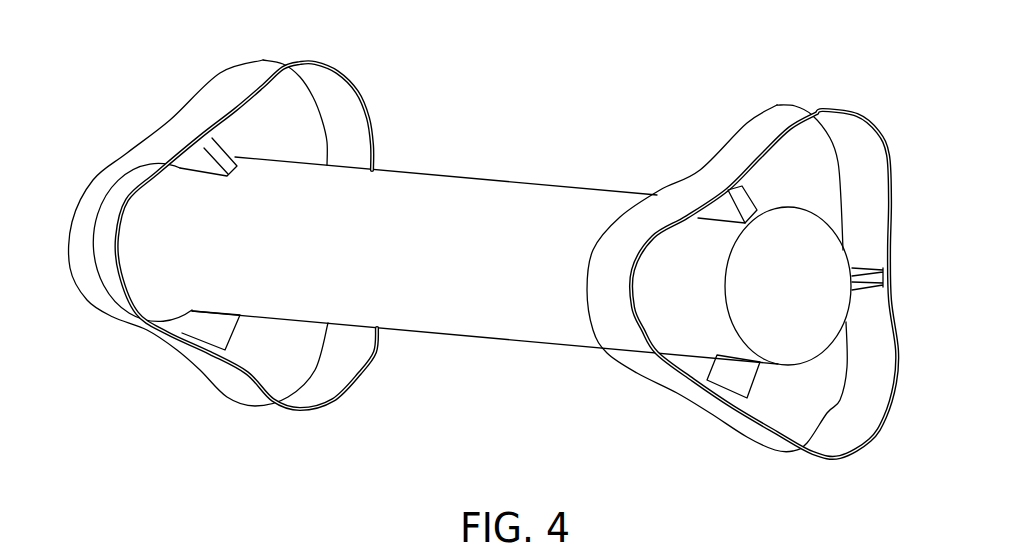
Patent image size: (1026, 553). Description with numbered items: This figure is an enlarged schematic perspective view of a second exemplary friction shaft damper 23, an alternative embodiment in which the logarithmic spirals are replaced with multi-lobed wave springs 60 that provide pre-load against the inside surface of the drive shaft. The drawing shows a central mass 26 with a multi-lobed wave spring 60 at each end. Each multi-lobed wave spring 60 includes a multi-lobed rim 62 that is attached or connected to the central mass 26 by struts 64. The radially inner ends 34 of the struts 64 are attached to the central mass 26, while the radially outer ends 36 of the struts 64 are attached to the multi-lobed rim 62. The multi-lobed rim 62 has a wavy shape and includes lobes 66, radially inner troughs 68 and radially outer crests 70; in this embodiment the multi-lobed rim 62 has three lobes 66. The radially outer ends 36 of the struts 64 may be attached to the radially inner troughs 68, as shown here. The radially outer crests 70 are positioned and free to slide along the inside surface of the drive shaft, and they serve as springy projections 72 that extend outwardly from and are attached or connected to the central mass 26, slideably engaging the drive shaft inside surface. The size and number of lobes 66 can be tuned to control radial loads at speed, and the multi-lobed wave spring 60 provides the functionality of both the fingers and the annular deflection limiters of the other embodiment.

The damper 23 is at (517, 258).
The central mass 26 is at (523, 182).
The radially inner ends 34 is at (743, 197).
The radially outer ends 36 is at (744, 196).
The multi-lobed wave spring 60 is at (253, 212).
The multi-lobed rim 62 is at (148, 180).
The struts 64 is at (229, 150).
The lobes 66 is at (776, 302).
The radially inner troughs 68 is at (893, 249).
The radially outer crests 70 is at (869, 444).
The springy projections 72 is at (223, 69).